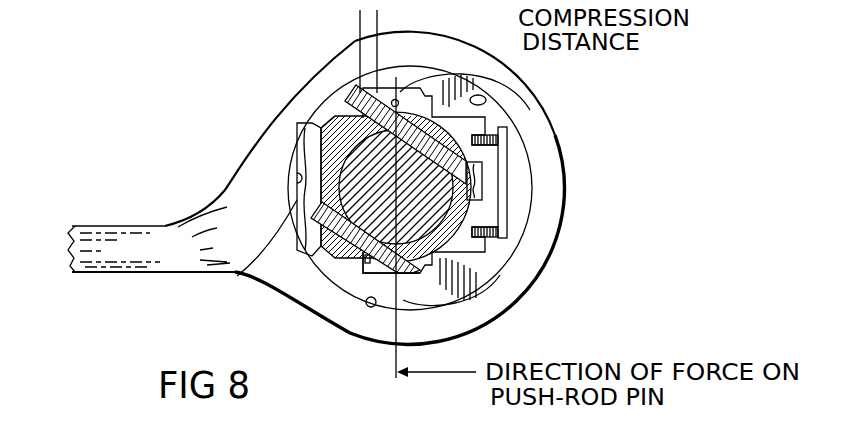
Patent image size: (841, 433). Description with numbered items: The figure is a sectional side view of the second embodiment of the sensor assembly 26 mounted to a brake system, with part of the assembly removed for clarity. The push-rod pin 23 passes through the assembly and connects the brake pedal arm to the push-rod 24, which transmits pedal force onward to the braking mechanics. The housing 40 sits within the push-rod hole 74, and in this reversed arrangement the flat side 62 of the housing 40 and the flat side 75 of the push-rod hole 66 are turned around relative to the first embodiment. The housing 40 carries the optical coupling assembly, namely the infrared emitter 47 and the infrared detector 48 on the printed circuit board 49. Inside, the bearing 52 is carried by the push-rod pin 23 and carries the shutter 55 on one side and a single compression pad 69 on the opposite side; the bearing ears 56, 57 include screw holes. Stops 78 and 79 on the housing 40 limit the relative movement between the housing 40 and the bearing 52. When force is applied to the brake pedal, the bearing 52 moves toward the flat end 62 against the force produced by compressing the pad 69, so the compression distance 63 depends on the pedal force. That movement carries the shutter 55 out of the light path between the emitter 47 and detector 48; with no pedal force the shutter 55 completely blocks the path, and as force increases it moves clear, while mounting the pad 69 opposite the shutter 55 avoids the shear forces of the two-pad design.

The push-rod pin 23 is at (346, 124).
The push-rod 24 is at (127, 274).
The sensor assembly 26 is at (327, 82).
The housing 40 is at (528, 222).
The infrared emitter 47 is at (505, 123).
The infrared detector 48 is at (505, 254).
The printed circuit board 49 is at (507, 168).
The bearing 52 is at (310, 258).
The shutter 55 is at (488, 189).
The bearing ear 56 is at (478, 66).
The bearing ear 57 is at (500, 316).
The flat side of housing 62 is at (296, 156).
The compression distance 63 is at (513, 15).
The push-rod hole 66 is at (369, 308).
The compression pad 69 is at (239, 273).
The push-rod hole 74 is at (505, 97).
The flat side of push-rod hole 75 is at (296, 180).
The stop 78 is at (334, 114).
The stop 79 is at (363, 268).